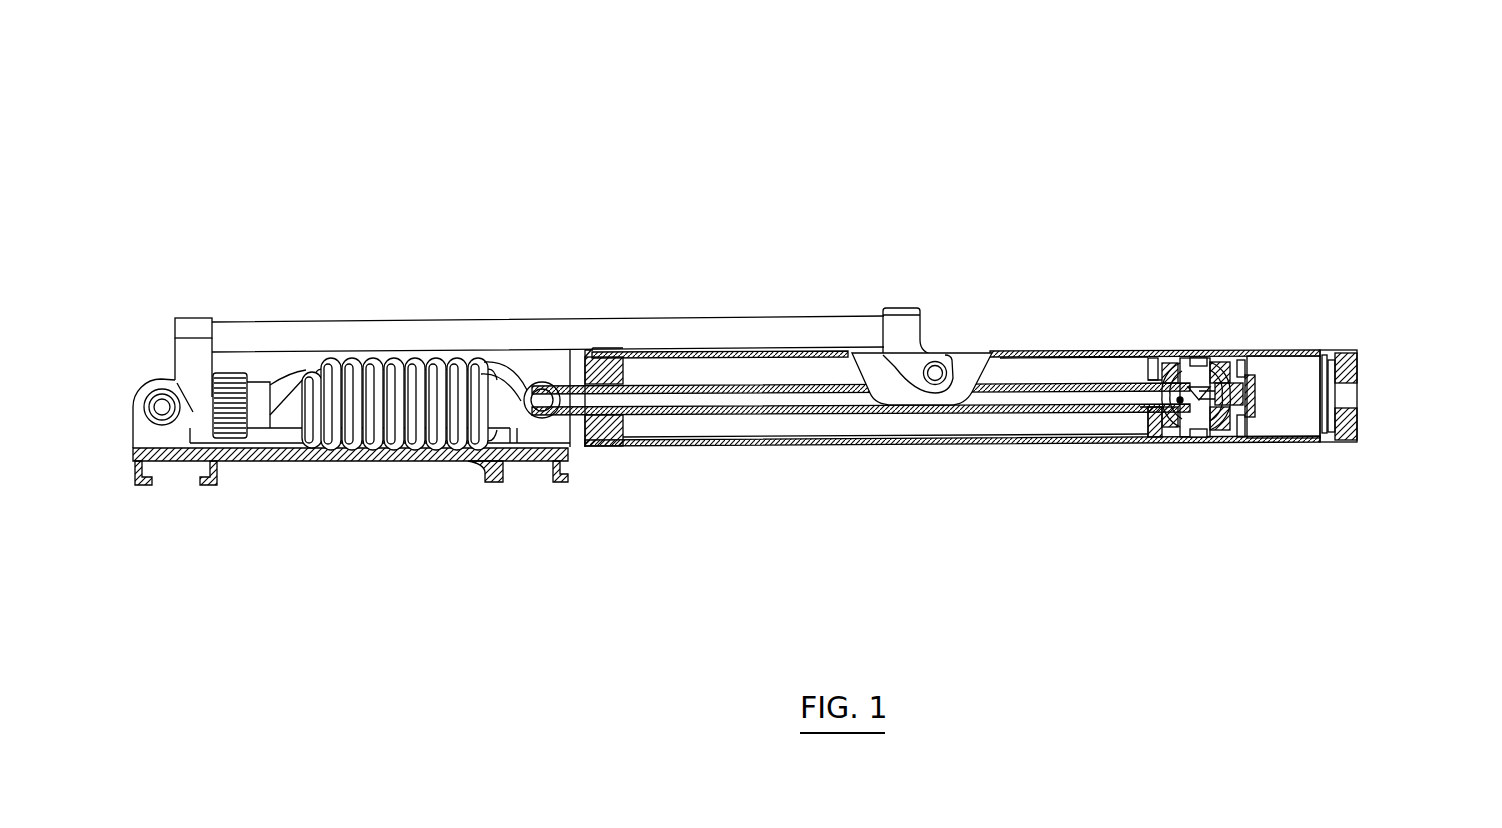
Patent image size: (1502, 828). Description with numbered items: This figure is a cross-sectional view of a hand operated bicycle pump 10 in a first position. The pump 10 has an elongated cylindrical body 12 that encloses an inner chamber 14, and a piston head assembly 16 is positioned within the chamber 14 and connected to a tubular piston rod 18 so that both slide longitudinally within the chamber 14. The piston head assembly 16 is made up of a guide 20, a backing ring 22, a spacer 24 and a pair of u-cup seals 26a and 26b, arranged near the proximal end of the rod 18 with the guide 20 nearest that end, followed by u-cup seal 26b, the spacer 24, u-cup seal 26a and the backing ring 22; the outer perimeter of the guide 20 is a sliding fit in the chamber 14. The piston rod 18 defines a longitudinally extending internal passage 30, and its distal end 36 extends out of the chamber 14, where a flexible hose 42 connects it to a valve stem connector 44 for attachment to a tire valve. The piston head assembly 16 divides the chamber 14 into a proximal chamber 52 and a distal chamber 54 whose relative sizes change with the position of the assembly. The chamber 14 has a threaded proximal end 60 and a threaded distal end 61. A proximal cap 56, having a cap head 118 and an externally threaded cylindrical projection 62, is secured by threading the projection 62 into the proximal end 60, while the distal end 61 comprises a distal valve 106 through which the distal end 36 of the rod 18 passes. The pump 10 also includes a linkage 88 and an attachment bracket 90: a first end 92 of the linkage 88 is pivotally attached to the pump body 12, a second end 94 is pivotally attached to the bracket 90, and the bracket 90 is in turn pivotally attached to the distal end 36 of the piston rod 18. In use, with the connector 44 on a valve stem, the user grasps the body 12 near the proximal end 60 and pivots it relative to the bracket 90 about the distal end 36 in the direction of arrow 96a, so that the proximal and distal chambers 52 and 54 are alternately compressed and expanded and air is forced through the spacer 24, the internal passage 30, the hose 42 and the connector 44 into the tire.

The manually operated pump 10 is at (800, 118).
The cylindrical body 12 is at (770, 455).
The inner chamber 14 is at (886, 428).
The piston head assembly 16 is at (1140, 415).
The tubular piston rod 18 is at (993, 360).
The guide 20 is at (1248, 440).
The backing ring 22 is at (1148, 362).
The spacer 24 is at (1200, 357).
The u-cup seal 26a is at (1167, 437).
The u-cup seal 26b is at (1228, 430).
The internal passage 30 is at (705, 400).
The distal end of piston rod 36 is at (578, 350).
The flexible hose 42 is at (408, 340).
The valve stem connector 44 is at (232, 437).
The proximal chamber 52 is at (1287, 380).
The distal chamber 54 is at (1058, 428).
The proximal cap 56 is at (1347, 447).
The threaded proximal end 60 is at (1342, 348).
The threaded distal end 61 is at (590, 450).
The cylindrical projection 62 is at (1353, 370).
The linkage 88 is at (843, 317).
The attachment bracket 90 is at (427, 457).
The first end of linkage 92 is at (895, 313).
The second end of linkage 94 is at (180, 323).
The arrow 96a is at (1313, 197).
The distal valve 106 is at (596, 353).
The cap head 118 is at (1355, 423).